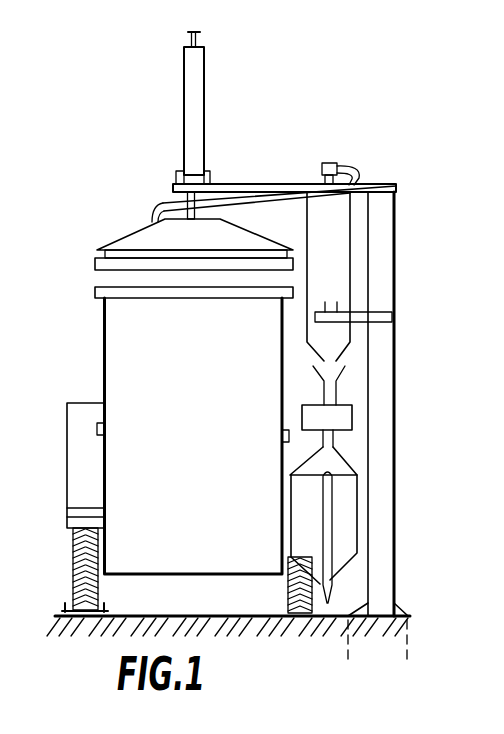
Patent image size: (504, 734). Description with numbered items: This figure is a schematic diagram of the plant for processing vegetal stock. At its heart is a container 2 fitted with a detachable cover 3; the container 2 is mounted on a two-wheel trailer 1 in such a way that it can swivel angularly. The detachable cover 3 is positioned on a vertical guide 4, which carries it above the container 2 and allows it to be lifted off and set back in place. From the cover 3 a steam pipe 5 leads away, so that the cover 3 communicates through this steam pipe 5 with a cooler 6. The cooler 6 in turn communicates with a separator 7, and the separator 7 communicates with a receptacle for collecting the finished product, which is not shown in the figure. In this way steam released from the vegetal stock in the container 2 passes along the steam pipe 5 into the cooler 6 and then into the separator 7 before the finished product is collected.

The two-wheel trailer 1 is at (78, 444).
The container 2 is at (113, 346).
The detachable cover 3 is at (137, 240).
The vertical guide 4 is at (384, 204).
The steam pipe 5 is at (160, 205).
The cooler 6 is at (318, 207).
The separator 7 is at (347, 519).